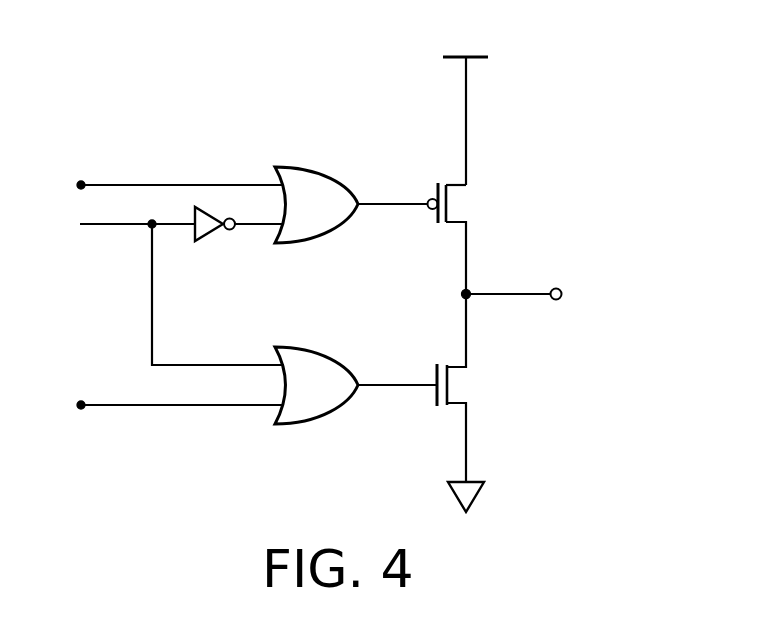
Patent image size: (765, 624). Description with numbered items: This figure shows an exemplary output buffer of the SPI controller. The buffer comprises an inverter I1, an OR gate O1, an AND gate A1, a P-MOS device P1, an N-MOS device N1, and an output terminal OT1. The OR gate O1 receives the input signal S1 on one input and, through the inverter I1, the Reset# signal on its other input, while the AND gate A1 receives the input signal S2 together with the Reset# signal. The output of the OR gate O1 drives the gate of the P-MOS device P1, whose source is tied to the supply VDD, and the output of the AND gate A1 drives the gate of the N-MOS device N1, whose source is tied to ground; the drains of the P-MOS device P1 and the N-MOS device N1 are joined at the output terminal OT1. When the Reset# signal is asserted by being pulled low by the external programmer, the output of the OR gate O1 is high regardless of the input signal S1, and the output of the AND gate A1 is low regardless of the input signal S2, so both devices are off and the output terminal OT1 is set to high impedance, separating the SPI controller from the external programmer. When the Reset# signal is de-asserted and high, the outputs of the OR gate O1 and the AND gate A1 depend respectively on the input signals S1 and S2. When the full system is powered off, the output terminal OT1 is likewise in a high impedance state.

The OR gate O1 is at (327, 166).
The AND gate A1 is at (325, 346).
The inverter I1 is at (239, 238).
The P-MOS device P1 is at (431, 230).
The N-MOS device N1 is at (429, 388).
The input signal S1 is at (160, 186).
The input signal S2 is at (160, 408).
The output terminal OT1 is at (539, 296).
The supply voltage VDD is at (464, 105).